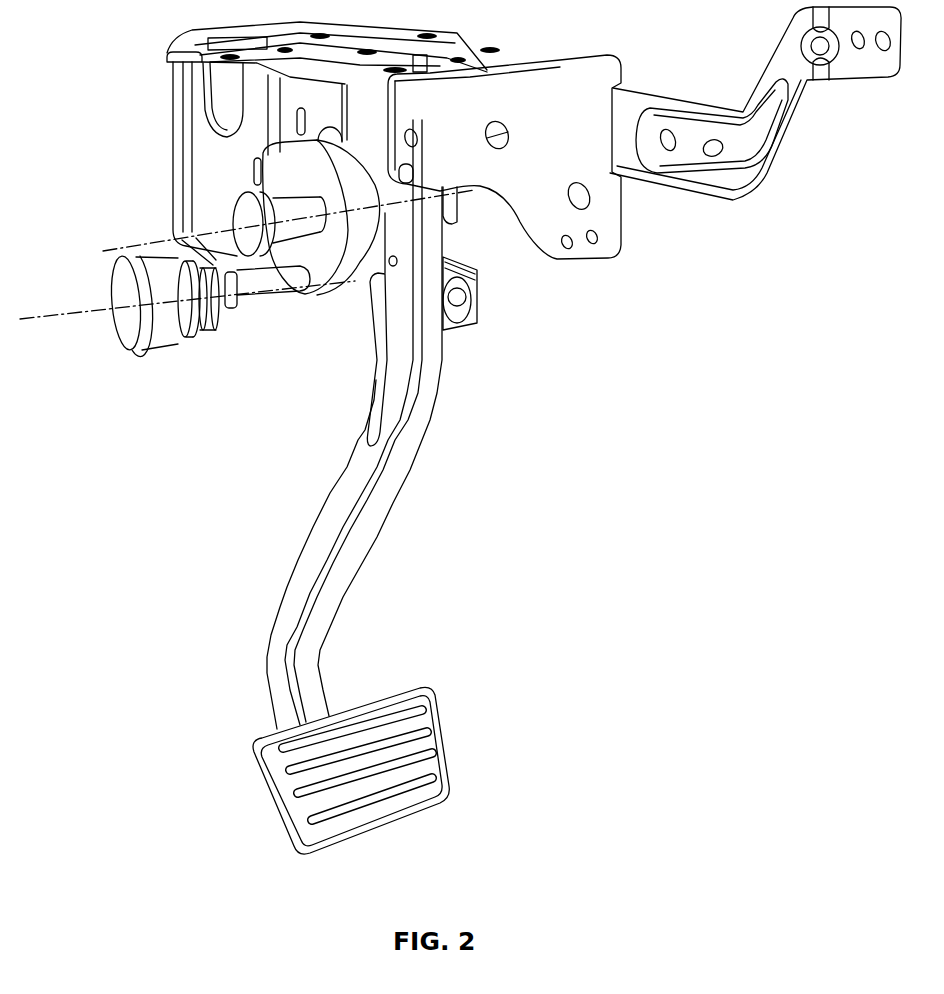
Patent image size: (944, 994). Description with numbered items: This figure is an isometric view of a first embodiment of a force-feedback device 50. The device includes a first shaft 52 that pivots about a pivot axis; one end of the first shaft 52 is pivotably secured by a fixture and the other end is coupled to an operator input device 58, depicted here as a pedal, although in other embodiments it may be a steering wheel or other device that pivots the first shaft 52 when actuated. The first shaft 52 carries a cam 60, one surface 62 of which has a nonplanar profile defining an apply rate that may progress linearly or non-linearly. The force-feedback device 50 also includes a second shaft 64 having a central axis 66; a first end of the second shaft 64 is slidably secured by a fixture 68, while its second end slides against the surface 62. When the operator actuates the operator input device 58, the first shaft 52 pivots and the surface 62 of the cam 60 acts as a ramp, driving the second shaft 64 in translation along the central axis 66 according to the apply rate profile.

The force-feedback device 50 is at (798, 230).
The first shaft 52 is at (130, 245).
The operator input device 58 is at (272, 632).
The cam 60 is at (373, 238).
The surface 62 is at (292, 182).
The second shaft 64 is at (282, 292).
The central axis 66 is at (68, 316).
The fixture 68 is at (165, 326).